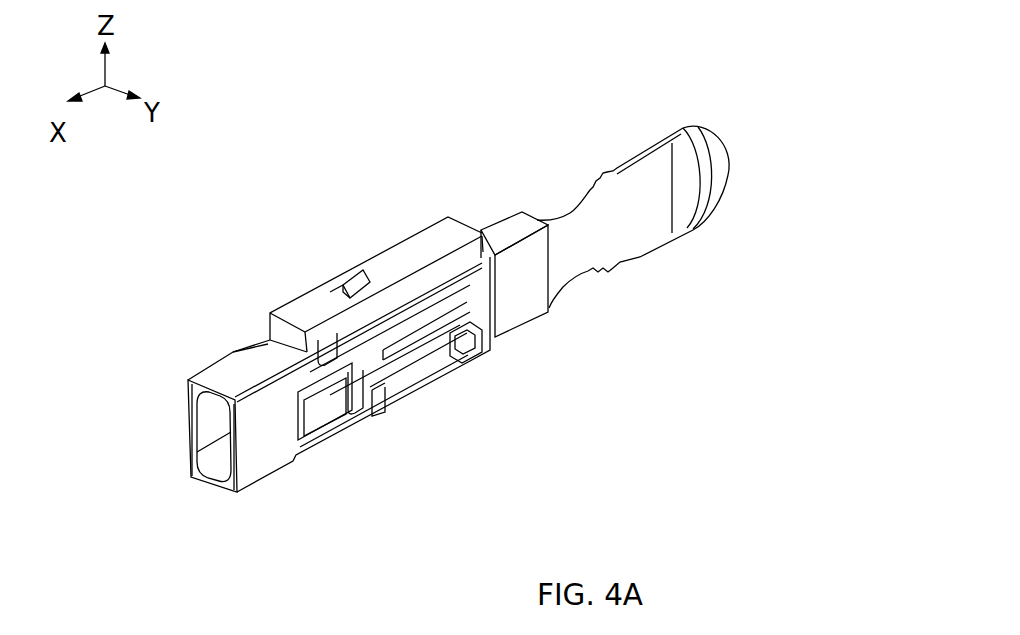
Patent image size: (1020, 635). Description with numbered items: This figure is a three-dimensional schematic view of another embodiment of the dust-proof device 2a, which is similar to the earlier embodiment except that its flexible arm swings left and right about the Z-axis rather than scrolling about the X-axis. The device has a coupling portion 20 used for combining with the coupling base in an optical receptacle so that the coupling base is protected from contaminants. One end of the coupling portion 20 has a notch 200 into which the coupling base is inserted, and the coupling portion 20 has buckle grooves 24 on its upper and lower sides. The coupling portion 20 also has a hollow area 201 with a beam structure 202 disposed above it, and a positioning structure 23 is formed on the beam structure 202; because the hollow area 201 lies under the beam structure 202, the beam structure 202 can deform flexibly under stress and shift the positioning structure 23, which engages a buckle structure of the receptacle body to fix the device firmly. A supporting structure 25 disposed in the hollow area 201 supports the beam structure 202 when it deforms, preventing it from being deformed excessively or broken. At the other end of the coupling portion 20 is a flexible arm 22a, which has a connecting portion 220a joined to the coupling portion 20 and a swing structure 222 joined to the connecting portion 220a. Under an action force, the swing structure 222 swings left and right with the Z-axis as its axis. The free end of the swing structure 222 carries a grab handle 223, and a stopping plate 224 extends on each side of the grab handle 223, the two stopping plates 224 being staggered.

The dust-proof device 2a is at (210, 196).
The coupling portion 20 is at (185, 466).
The notch 200 is at (207, 413).
The buckle grooves 24 is at (273, 362).
The positioning structure 23 is at (352, 278).
The supporting structure 25 is at (358, 325).
The beam structure 202 is at (422, 275).
The hollow area 201 is at (448, 283).
The connecting portion 220a is at (530, 292).
The flexible arm 22a is at (587, 128).
The grab handle 223 is at (722, 168).
The stopping plate 224 is at (710, 193).
The swing structure 222 is at (642, 254).